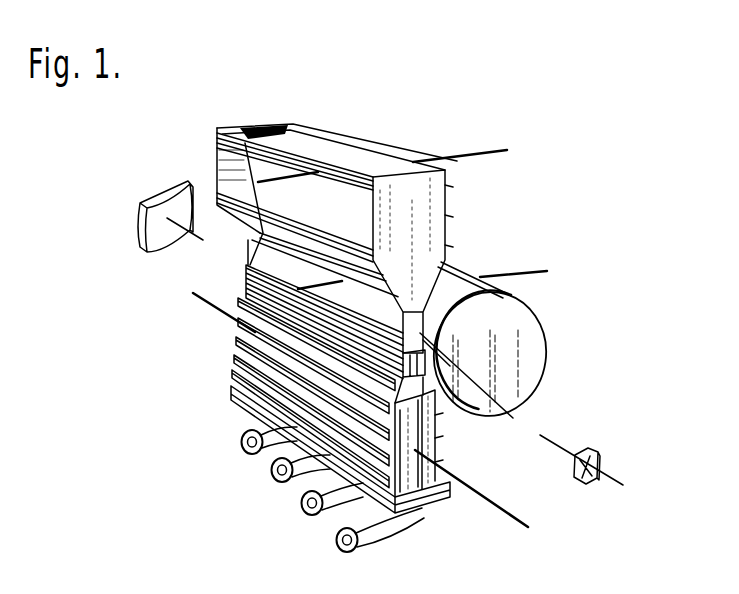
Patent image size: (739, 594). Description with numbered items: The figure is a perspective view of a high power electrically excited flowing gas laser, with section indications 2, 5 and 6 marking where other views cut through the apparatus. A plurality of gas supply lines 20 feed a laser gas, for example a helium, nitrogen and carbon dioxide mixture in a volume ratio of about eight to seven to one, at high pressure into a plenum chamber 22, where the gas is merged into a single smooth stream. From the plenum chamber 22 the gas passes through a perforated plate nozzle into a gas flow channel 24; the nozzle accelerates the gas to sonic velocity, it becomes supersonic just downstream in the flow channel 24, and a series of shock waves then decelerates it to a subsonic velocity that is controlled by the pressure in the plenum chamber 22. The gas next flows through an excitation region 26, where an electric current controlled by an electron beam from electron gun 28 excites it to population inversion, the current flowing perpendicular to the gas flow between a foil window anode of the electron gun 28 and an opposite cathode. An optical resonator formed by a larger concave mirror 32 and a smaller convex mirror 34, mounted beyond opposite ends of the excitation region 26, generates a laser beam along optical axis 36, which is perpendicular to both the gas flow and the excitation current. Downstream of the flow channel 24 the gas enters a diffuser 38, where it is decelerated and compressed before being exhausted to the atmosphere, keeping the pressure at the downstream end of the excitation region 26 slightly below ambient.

The section line 2- 2 is at (200, 310).
The section line 5- 5 is at (290, 181).
The section line 6- 6 is at (321, 294).
The gas supply lines 20 is at (340, 535).
The plenum chamber 22 is at (422, 497).
The gas flow channel 24 is at (430, 424).
The excitation region 26 is at (226, 268).
The electron gun 28 is at (450, 285).
The larger concave mirror 32 is at (147, 198).
The smaller convex mirror 34 is at (600, 458).
The optical axis 36 is at (540, 435).
The diffuser 38 is at (433, 233).